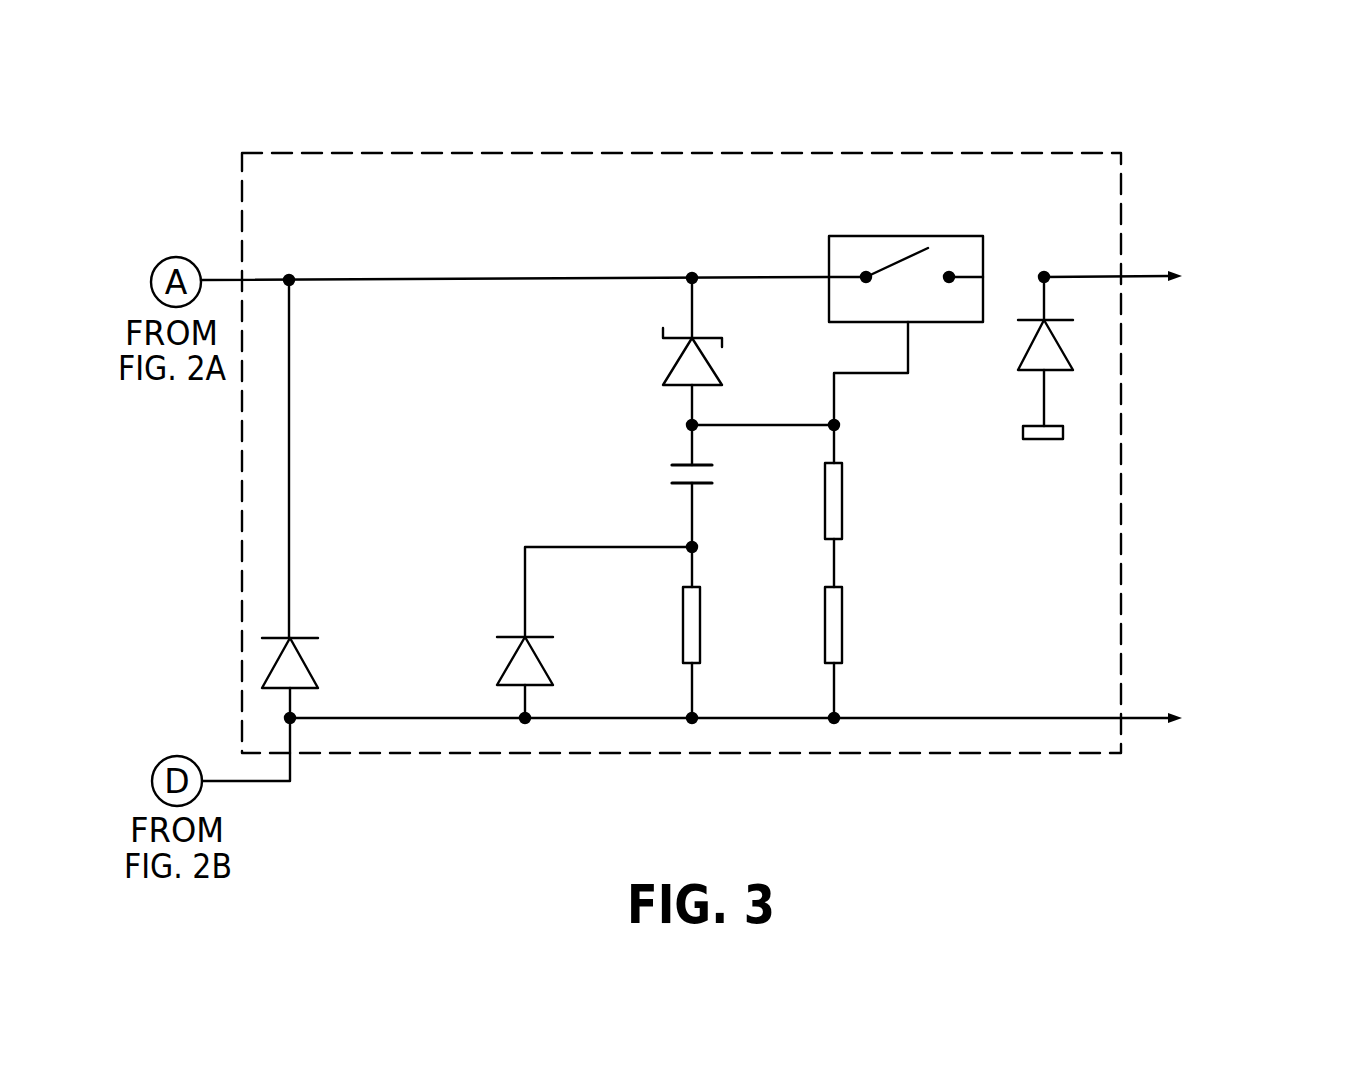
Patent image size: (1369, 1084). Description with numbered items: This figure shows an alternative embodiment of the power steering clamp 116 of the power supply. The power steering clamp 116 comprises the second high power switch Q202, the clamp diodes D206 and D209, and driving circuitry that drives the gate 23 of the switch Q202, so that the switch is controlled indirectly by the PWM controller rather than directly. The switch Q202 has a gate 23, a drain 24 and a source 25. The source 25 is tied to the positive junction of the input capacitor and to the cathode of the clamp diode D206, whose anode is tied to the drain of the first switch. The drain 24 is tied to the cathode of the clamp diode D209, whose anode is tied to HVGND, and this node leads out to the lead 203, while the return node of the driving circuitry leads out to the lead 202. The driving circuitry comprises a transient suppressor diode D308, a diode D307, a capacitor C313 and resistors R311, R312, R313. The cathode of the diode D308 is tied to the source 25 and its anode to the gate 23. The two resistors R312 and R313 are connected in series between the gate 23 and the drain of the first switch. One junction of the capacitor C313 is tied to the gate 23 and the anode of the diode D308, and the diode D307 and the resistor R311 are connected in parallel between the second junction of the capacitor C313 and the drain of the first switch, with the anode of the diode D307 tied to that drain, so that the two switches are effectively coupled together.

The power steering clamp 116 is at (632, 150).
The second high power switch Q202 is at (912, 236).
The source 25 is at (829, 275).
The drain 24 is at (983, 272).
The gate 23 is at (912, 322).
The transient suppressor diode D308 is at (677, 359).
The capacitor C313 is at (648, 461).
The resistor R311 is at (700, 622).
The resistor R312 is at (843, 498).
The resistor R313 is at (843, 622).
The diode D307 is at (553, 665).
The clamp diode D206 is at (327, 664).
The clamp diode D209 is at (1030, 373).
The lead 202 is at (1266, 695).
The lead 203 is at (1204, 256).